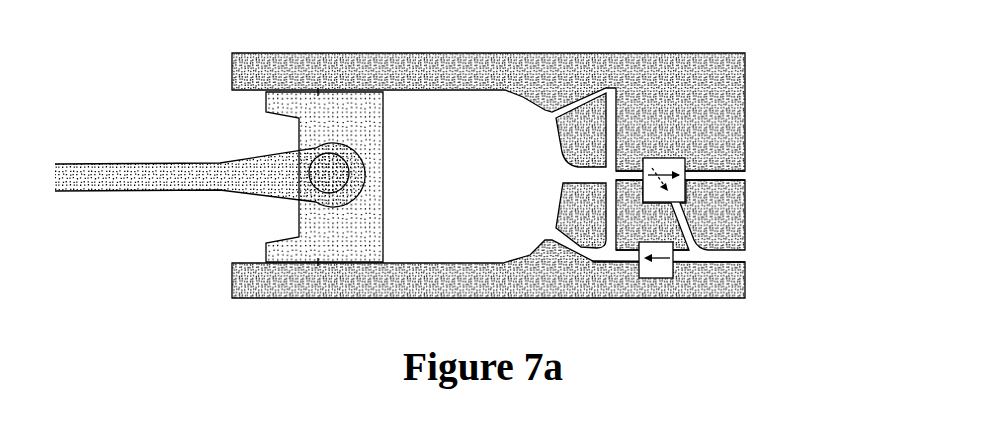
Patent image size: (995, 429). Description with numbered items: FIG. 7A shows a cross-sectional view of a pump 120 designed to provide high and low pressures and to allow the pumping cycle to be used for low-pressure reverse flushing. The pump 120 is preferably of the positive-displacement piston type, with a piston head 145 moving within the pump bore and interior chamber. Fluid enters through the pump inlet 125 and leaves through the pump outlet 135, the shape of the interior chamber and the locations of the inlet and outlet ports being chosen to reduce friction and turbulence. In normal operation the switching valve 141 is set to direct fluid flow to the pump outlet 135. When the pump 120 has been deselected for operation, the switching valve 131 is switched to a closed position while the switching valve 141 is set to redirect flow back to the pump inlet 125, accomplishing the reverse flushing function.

The pump 120 is at (488, 159).
The piston head 145 is at (219, 177).
The switching valve 141 is at (664, 165).
The switching valve 131 is at (638, 266).
The pump outlet 135 is at (748, 175).
The pump inlet 125 is at (748, 255).